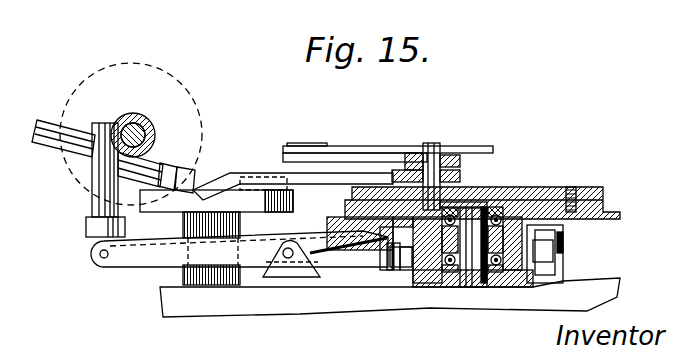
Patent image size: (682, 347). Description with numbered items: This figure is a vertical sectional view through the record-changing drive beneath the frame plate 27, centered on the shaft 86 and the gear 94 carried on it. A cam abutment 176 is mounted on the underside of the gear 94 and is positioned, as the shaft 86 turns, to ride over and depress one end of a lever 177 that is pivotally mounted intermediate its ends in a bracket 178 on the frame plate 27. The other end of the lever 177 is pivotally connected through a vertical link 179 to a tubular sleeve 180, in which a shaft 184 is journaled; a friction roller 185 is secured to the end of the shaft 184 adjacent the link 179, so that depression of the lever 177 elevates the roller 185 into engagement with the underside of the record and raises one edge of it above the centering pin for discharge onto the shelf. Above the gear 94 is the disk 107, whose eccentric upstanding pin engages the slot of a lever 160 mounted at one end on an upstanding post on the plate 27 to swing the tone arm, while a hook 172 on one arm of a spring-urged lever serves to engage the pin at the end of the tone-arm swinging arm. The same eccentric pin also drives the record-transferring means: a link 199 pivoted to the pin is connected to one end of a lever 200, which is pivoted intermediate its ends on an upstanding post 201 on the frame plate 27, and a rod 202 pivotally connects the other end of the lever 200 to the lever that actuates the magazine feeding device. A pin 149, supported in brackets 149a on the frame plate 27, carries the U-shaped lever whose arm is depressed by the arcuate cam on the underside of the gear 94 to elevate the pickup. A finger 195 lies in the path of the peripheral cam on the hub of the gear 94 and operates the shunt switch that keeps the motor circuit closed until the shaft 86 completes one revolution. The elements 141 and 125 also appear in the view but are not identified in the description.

The friction roller 185 is at (150, 62).
The rod 202 is at (46, 118).
The shaft 184 is at (133, 122).
The tubular sleeve 180 is at (148, 124).
The vertical link 179 is at (98, 210).
The upstanding post 201 is at (197, 228).
The lever 200 is at (250, 207).
The link 199 is at (316, 175).
The hook 172 is at (492, 148).
The lever 160 is at (447, 157).
The disk 107 is at (590, 186).
The gear 94 is at (606, 211).
The roller follower 141 is at (553, 238).
The pin 149 is at (556, 250).
The brackets 149a is at (556, 268).
The cam abutment 176 is at (373, 243).
The bracket foot 125 is at (398, 271).
The shaft 86 is at (470, 267).
The finger 195 is at (533, 284).
The lever 177 is at (253, 260).
The bracket 178 is at (287, 273).
The frame plate 27 is at (168, 297).